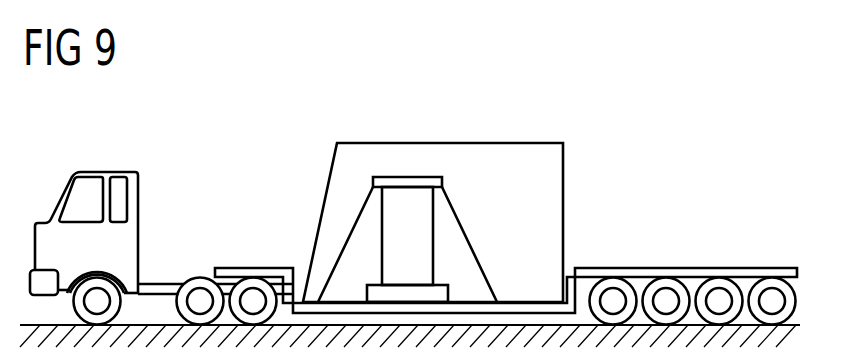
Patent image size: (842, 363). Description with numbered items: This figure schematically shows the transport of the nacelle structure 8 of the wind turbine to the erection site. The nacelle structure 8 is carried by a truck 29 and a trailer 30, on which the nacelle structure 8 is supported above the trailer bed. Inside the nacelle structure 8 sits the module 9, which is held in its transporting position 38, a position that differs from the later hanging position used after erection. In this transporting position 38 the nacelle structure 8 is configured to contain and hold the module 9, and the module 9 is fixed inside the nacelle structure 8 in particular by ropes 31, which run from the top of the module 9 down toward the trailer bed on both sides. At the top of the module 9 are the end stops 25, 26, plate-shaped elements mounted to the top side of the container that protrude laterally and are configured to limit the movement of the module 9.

The truck 29 is at (103, 170).
The trailer 30 is at (612, 273).
The transporting position 38 is at (485, 186).
The nacelle structure 8 is at (478, 142).
The module 9 is at (407, 198).
The end stop 25 is at (373, 183).
The end stop 26 is at (443, 183).
The ropes 31 is at (345, 242).